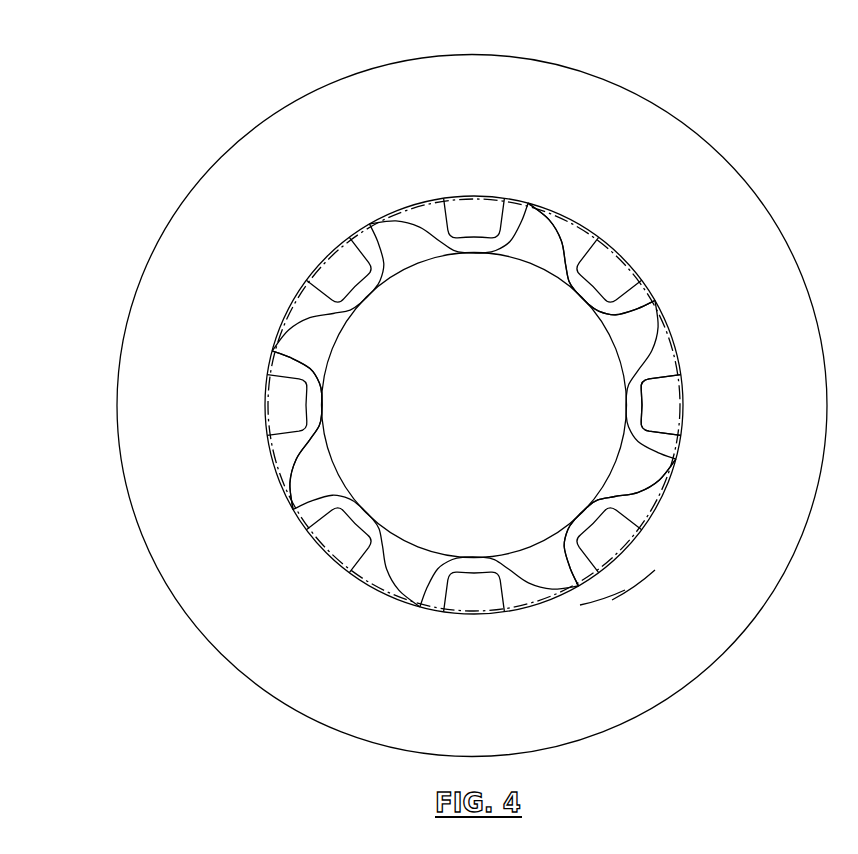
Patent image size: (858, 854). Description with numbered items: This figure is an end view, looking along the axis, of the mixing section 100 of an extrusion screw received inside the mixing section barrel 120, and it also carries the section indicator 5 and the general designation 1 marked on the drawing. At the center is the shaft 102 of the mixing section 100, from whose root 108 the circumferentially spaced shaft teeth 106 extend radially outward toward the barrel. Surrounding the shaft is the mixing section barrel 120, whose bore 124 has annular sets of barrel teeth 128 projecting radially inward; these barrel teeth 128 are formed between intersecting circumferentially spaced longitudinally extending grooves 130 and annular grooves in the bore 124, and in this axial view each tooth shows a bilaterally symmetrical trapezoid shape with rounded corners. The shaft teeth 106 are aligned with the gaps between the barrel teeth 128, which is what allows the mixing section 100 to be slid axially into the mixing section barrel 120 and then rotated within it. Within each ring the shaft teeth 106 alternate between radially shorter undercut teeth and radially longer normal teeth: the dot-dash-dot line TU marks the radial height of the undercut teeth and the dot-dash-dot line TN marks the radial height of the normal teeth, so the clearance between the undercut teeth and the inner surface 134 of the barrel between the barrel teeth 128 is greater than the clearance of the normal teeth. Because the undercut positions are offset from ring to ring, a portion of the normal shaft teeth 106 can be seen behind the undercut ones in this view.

The ring edge 1 is at (663, 453).
The section line 5- 5 is at (561, 200).
The mixing section 100 is at (284, 502).
The shaft 102 is at (491, 421).
The shaft teeth 106 is at (411, 568).
The root 108 is at (597, 297).
The mixing section barrel 120 is at (228, 101).
The bore 124 is at (541, 618).
The barrel teeth 128 is at (467, 210).
The longitudinally extending grooves 130 is at (278, 458).
The inner surface 134 is at (655, 506).
The dot-dash-dot line TN is at (638, 534).
The dot-dash-dot line TU is at (614, 558).